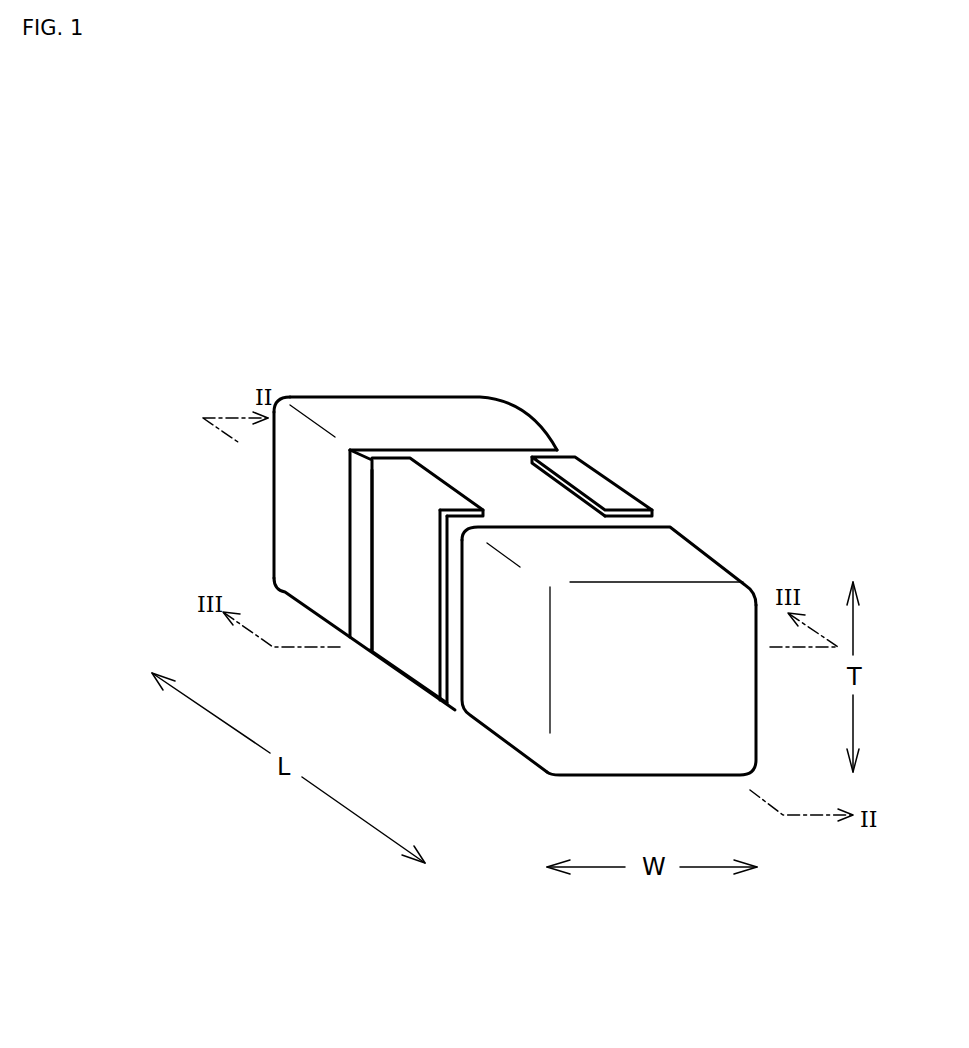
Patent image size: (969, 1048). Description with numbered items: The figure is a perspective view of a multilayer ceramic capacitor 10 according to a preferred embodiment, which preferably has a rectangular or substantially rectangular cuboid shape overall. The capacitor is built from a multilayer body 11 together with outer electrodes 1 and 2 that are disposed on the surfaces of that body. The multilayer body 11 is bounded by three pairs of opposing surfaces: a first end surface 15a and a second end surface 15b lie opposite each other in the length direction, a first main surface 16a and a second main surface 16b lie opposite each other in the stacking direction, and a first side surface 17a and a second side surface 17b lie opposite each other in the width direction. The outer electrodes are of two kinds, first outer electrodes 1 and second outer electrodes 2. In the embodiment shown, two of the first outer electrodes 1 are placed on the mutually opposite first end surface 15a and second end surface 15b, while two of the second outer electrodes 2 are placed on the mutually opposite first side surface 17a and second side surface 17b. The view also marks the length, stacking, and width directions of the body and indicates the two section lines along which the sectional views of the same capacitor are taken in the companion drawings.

The multilayer ceramic capacitor 10 is at (690, 447).
The first outer electrode 1 is at (393, 410).
The second outer electrode 2 is at (397, 522).
The multilayer body 11 is at (495, 467).
The first end surface 15a is at (298, 508).
The second end surface 15b is at (603, 703).
The first main surface 16a is at (532, 480).
The second main surface 16b is at (437, 700).
The first side surface 17a is at (363, 618).
The second side surface 17b is at (662, 522).